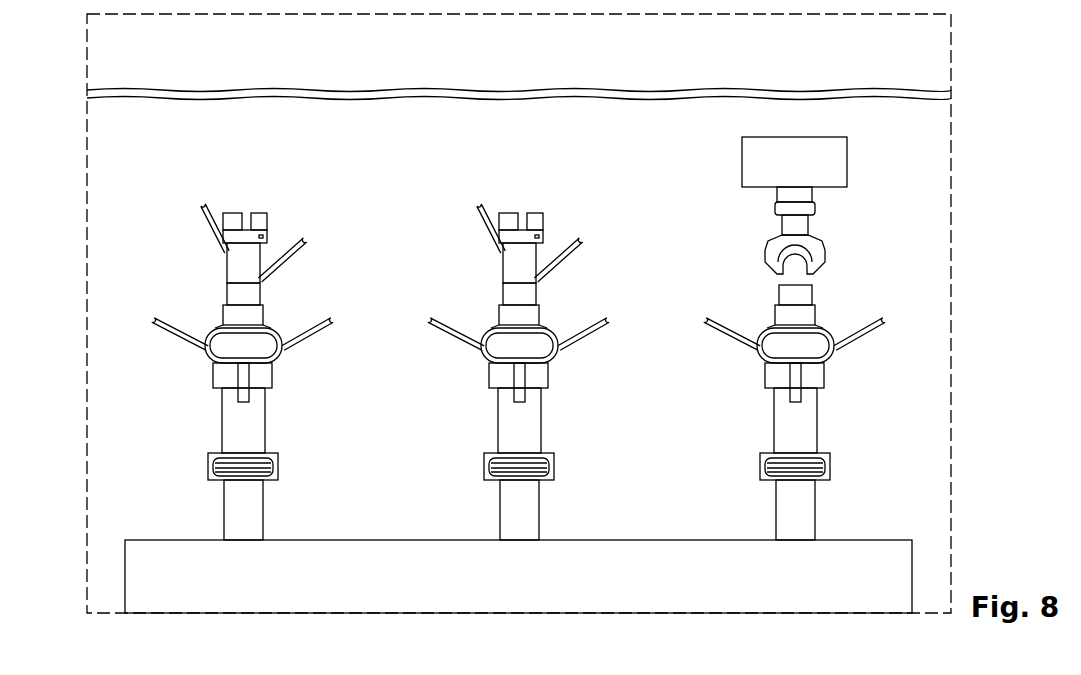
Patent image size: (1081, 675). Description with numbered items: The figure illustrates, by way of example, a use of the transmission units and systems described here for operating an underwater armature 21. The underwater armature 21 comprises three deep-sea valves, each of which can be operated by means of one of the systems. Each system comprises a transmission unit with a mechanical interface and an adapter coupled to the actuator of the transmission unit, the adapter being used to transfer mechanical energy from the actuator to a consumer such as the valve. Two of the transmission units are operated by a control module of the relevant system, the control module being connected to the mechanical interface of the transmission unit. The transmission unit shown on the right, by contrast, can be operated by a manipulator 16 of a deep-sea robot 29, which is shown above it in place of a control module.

The manipulator 16 is at (818, 254).
The underwater armature 21 is at (508, 588).
The deep-sea robot 29 is at (794, 186).